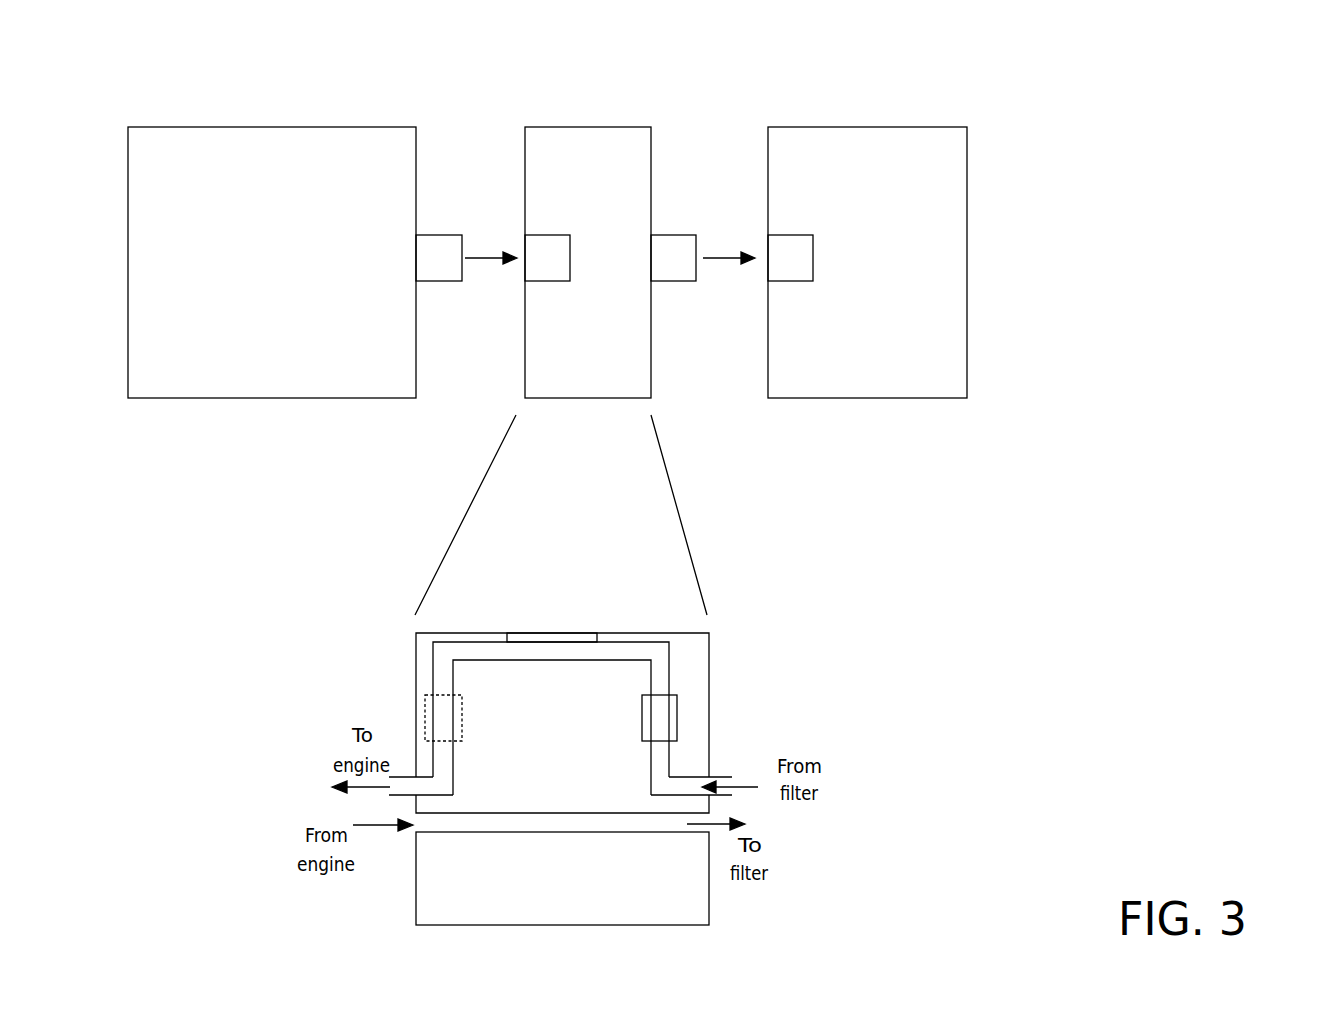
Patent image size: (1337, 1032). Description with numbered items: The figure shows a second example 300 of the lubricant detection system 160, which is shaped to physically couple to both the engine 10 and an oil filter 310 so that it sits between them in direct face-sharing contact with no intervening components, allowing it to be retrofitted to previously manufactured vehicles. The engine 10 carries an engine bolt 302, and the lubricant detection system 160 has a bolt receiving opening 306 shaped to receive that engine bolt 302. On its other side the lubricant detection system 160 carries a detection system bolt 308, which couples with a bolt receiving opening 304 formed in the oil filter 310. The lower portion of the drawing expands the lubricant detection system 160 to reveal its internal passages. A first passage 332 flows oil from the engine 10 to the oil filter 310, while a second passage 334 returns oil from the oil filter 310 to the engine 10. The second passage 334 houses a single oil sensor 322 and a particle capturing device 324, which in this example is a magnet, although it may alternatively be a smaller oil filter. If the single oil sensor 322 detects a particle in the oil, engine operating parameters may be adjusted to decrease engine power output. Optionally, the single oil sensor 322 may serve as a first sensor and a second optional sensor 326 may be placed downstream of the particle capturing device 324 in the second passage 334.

The second example of the lubricant detection system 300 is at (1244, 38).
The engine 10 is at (200, 126).
The engine bolt 302 is at (435, 234).
The lubricant detection system 160 is at (598, 126).
The bolt receiving opening 306 is at (543, 234).
The detection system bolt 308 is at (670, 234).
The oil filter 310 is at (838, 126).
The bolt receiving opening 304 is at (787, 234).
The particle capturing device 324 is at (552, 633).
The second optional sensor 326 is at (462, 699).
The single oil sensor 322 is at (677, 712).
The second passage 334 is at (588, 660).
The first passage 332 is at (555, 832).